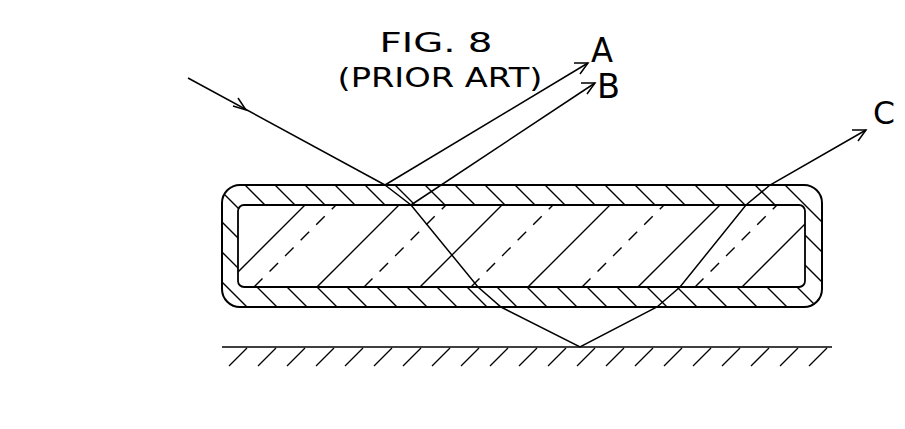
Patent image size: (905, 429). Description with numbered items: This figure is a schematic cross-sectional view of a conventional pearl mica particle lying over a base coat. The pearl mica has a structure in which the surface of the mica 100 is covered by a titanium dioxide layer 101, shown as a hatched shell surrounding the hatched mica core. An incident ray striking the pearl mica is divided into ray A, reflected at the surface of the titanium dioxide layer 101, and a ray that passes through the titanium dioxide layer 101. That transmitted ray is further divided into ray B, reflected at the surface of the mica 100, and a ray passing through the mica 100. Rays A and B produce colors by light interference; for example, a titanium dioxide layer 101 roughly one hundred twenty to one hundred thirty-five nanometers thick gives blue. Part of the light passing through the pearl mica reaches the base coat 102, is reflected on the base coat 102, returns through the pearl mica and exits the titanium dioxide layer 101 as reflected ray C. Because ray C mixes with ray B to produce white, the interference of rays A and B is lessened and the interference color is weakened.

The mica 100 is at (254, 255).
The titanium dioxide layer 101 is at (626, 194).
The base coat 102 is at (762, 350).